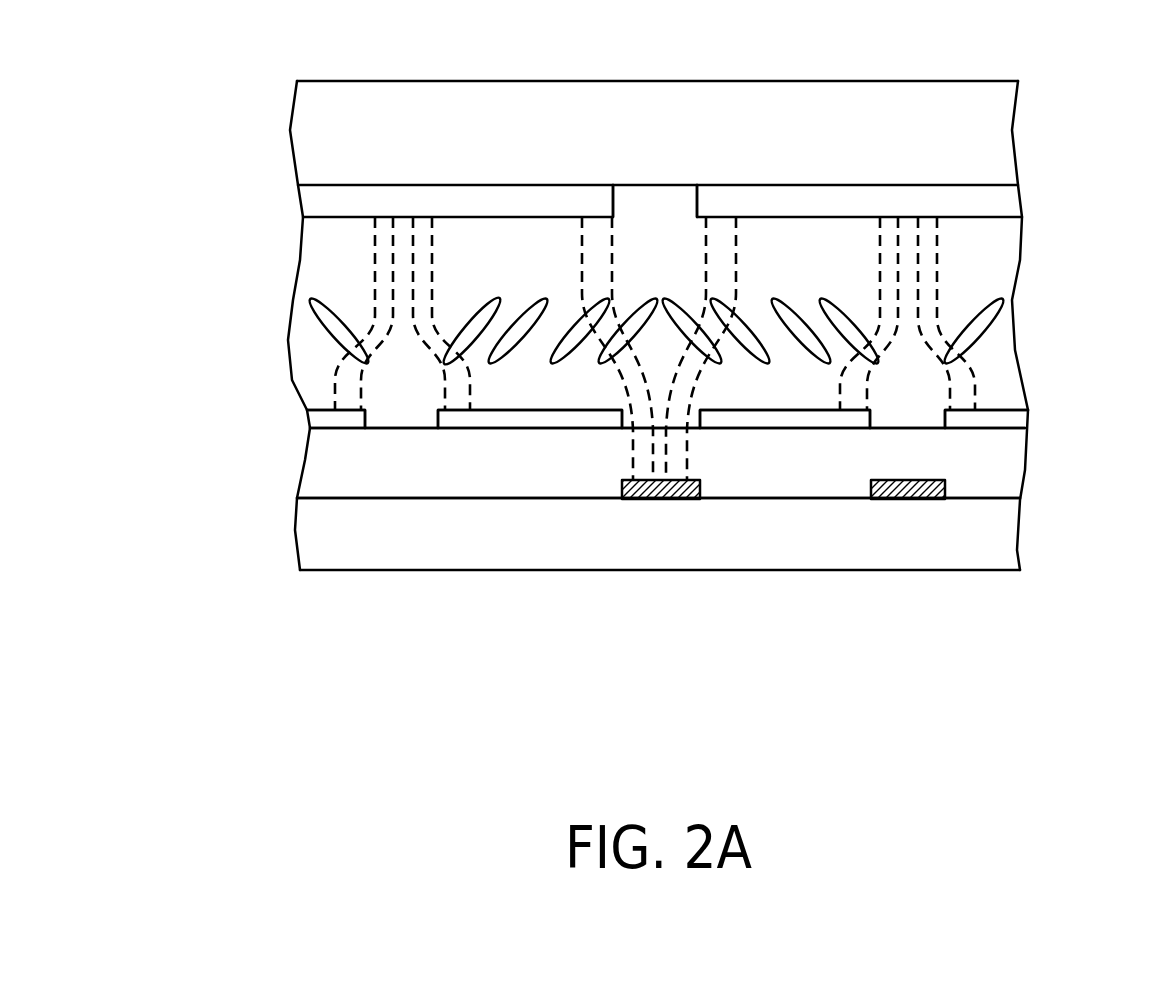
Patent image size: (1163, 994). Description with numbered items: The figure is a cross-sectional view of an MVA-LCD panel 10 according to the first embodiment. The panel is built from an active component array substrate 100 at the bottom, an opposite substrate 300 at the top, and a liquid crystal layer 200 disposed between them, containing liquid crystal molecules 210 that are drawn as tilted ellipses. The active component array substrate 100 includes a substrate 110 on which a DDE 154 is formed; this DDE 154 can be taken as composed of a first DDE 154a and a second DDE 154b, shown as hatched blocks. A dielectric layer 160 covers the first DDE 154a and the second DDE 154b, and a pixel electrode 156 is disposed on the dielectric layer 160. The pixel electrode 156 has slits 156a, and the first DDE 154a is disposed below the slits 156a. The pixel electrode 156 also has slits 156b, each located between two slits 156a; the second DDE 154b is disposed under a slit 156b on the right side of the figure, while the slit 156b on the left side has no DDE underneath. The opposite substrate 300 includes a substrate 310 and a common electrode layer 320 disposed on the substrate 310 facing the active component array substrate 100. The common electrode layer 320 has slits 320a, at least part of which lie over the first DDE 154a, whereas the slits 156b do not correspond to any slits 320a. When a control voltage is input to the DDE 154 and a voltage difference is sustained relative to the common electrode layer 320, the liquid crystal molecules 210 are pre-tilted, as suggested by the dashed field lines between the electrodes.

The MVA-LCD panel 10 is at (656, 385).
The active component array substrate 100 is at (656, 573).
The substrate 110 is at (1000, 537).
The DDE 154 is at (783, 617).
The first DDE 154a is at (680, 500).
The second DDE 154b is at (887, 500).
The pixel electrode 156 is at (727, 528).
The slits 156a is at (638, 412).
The slits 156b is at (381, 412).
The dielectric layer 160 is at (1010, 467).
The liquid crystal layer 200 is at (638, 347).
The liquid crystal molecules 210 is at (978, 330).
The opposite substrate 300 is at (655, 118).
The substrate 310 is at (998, 145).
The common electrode layer 320 is at (1010, 205).
The slits 320a is at (628, 208).